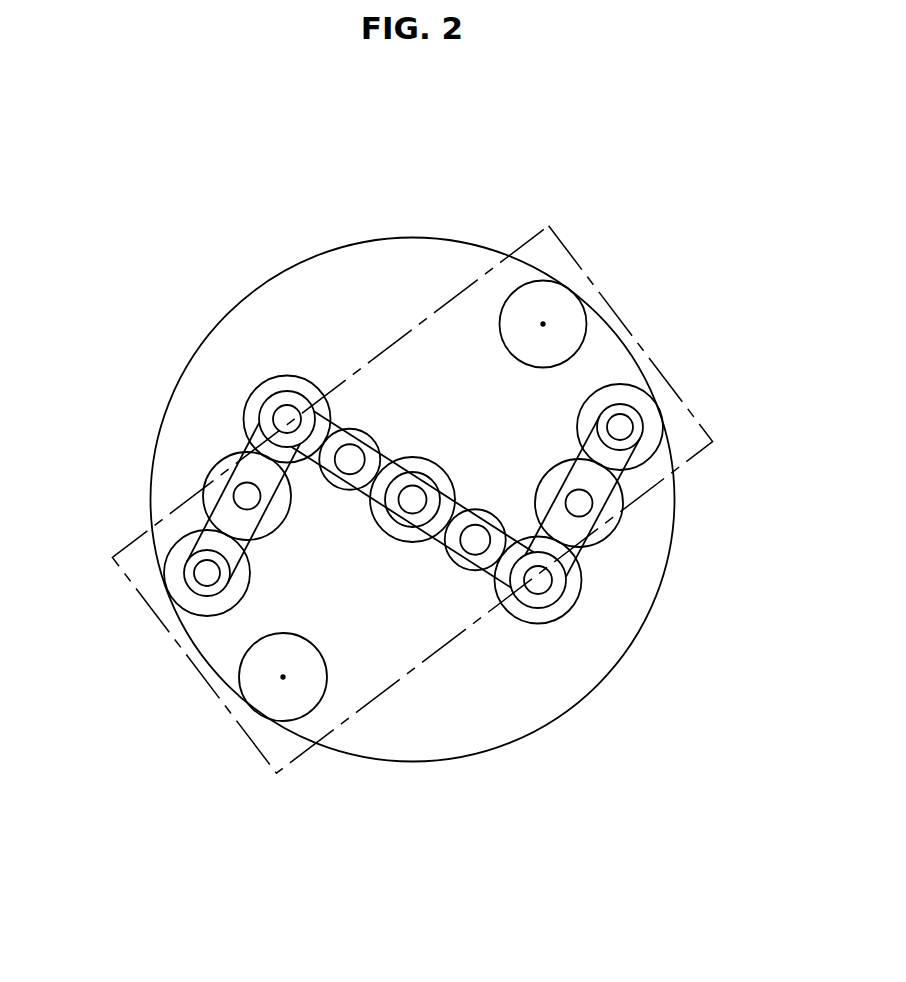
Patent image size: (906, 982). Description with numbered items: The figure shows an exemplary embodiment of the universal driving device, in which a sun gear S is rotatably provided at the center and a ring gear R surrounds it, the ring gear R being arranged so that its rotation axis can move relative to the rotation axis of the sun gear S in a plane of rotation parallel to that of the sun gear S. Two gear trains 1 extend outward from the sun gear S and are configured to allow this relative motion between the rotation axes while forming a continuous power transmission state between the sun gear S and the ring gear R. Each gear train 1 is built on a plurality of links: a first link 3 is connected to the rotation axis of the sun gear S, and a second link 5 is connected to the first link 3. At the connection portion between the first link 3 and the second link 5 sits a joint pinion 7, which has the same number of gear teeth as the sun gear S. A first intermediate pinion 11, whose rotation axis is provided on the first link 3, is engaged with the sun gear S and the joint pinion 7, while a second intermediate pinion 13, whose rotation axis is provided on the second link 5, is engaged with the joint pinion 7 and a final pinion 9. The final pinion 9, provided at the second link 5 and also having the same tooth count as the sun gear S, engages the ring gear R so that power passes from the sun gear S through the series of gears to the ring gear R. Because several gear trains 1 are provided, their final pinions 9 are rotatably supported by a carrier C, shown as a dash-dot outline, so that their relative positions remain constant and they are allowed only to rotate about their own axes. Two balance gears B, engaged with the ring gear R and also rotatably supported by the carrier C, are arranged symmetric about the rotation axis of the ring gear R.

The gear train 1 is at (412, 494).
The first link 3 is at (330, 483).
The second link 5 is at (250, 441).
The joint pinion 7 is at (277, 380).
The final pinion 9 is at (173, 560).
The first intermediate pinion 11 is at (362, 430).
The second intermediate pinion 13 is at (207, 487).
The sun gear S is at (422, 457).
The balance gear B is at (545, 303).
The carrier C is at (613, 308).
The ring gear R is at (193, 356).